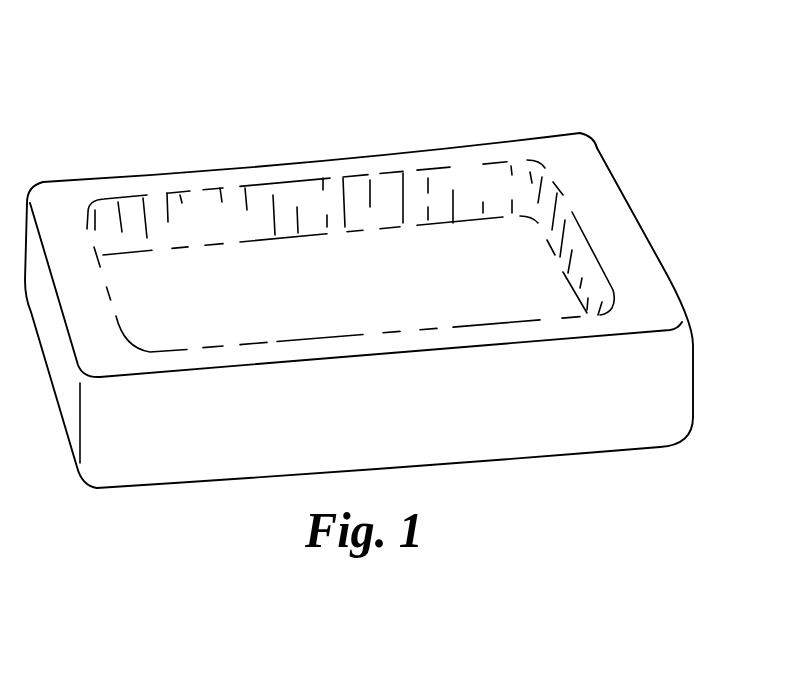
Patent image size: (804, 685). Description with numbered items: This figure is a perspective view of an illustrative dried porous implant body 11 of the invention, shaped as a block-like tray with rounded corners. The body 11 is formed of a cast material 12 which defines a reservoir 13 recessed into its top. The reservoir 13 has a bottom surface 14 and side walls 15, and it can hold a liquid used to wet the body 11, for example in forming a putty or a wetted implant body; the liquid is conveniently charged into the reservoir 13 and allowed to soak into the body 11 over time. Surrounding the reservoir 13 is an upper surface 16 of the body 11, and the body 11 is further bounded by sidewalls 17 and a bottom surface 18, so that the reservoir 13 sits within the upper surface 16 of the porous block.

The dried porous implant body 11 is at (159, 70).
The cast material 12 is at (502, 139).
The reservoir 13 is at (451, 236).
The bottom surface 14 is at (145, 293).
The side walls 15 is at (258, 214).
The upper surface 16 is at (643, 252).
The sidewalls 17 is at (580, 417).
The bottom surface 18 is at (233, 480).